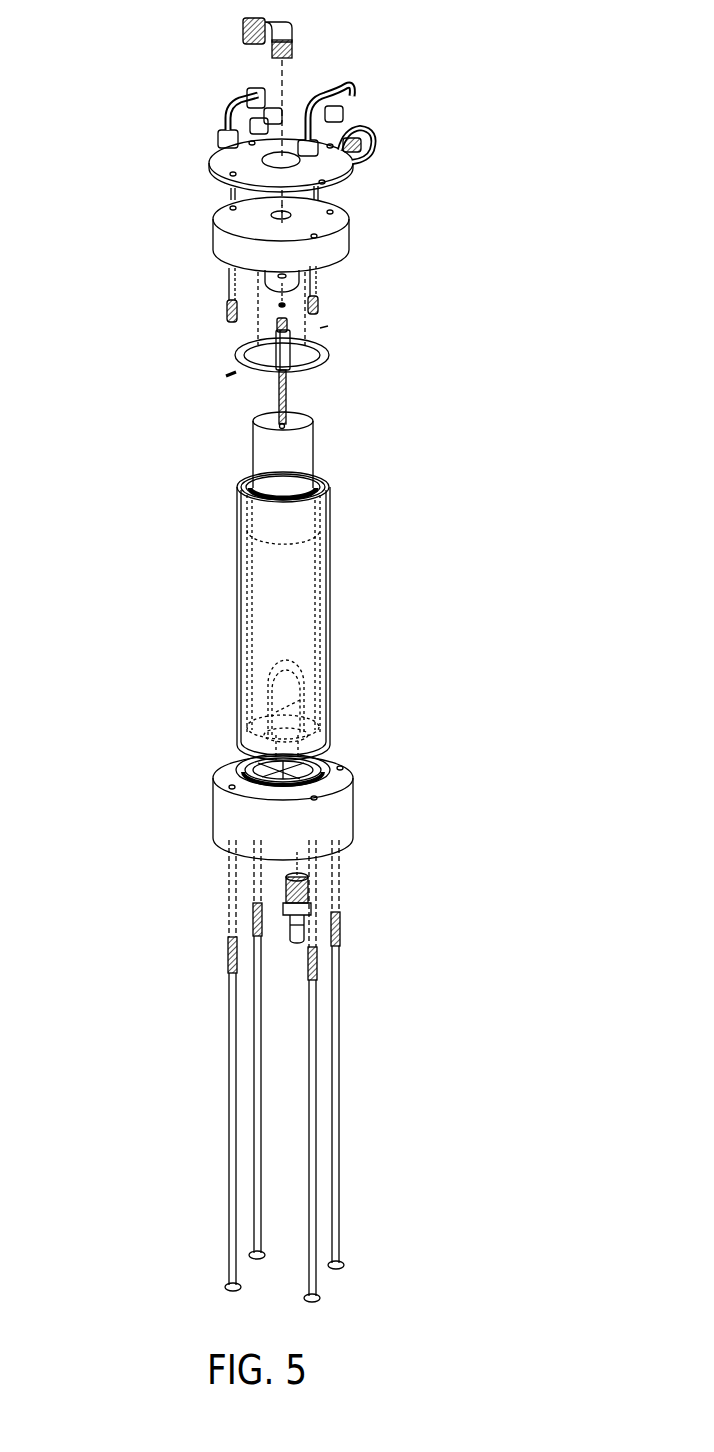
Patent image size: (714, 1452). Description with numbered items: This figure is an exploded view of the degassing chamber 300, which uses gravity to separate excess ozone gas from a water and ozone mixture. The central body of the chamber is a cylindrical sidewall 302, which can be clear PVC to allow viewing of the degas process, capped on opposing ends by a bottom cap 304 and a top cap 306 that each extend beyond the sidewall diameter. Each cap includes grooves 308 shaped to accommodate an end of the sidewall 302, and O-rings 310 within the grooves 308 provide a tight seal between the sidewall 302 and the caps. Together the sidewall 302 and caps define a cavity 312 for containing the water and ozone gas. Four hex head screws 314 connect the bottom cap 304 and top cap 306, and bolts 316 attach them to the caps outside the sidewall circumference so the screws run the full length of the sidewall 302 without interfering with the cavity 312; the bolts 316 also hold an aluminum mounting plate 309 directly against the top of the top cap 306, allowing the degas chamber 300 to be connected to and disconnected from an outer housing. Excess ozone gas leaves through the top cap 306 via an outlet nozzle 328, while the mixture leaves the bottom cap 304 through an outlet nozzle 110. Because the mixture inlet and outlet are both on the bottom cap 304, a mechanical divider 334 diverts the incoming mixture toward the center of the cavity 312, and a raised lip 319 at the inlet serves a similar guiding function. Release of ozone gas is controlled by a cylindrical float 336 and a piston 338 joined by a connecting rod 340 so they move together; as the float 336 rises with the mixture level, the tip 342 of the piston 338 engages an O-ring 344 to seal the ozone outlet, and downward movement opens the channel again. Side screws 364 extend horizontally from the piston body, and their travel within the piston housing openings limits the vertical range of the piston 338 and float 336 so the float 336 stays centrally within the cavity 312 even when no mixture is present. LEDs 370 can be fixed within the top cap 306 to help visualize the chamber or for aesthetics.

The degassing chamber 300 is at (148, 91).
The outlet nozzle 328 is at (292, 50).
The aluminum mounting plate 309 is at (346, 172).
The bolts 316 is at (220, 140).
The top cap 306 is at (222, 240).
The LEDs 370 is at (230, 298).
The O-ring 344 is at (300, 303).
The side screws 364 is at (328, 327).
The tip 342 is at (278, 323).
The O-rings 310 is at (328, 352).
The piston 338 is at (283, 338).
The connecting rod 340 is at (290, 390).
The cylindrical float 336 is at (303, 465).
The cavity 312 is at (333, 628).
The cylindrical sidewall 302 is at (258, 608).
The mechanical divider 334 is at (280, 690).
The raised lip 319 is at (252, 770).
The grooves 308 is at (326, 780).
The bottom cap 304 is at (222, 806).
The outlet nozzle 110 is at (312, 893).
The hex head screws 314 is at (342, 1029).